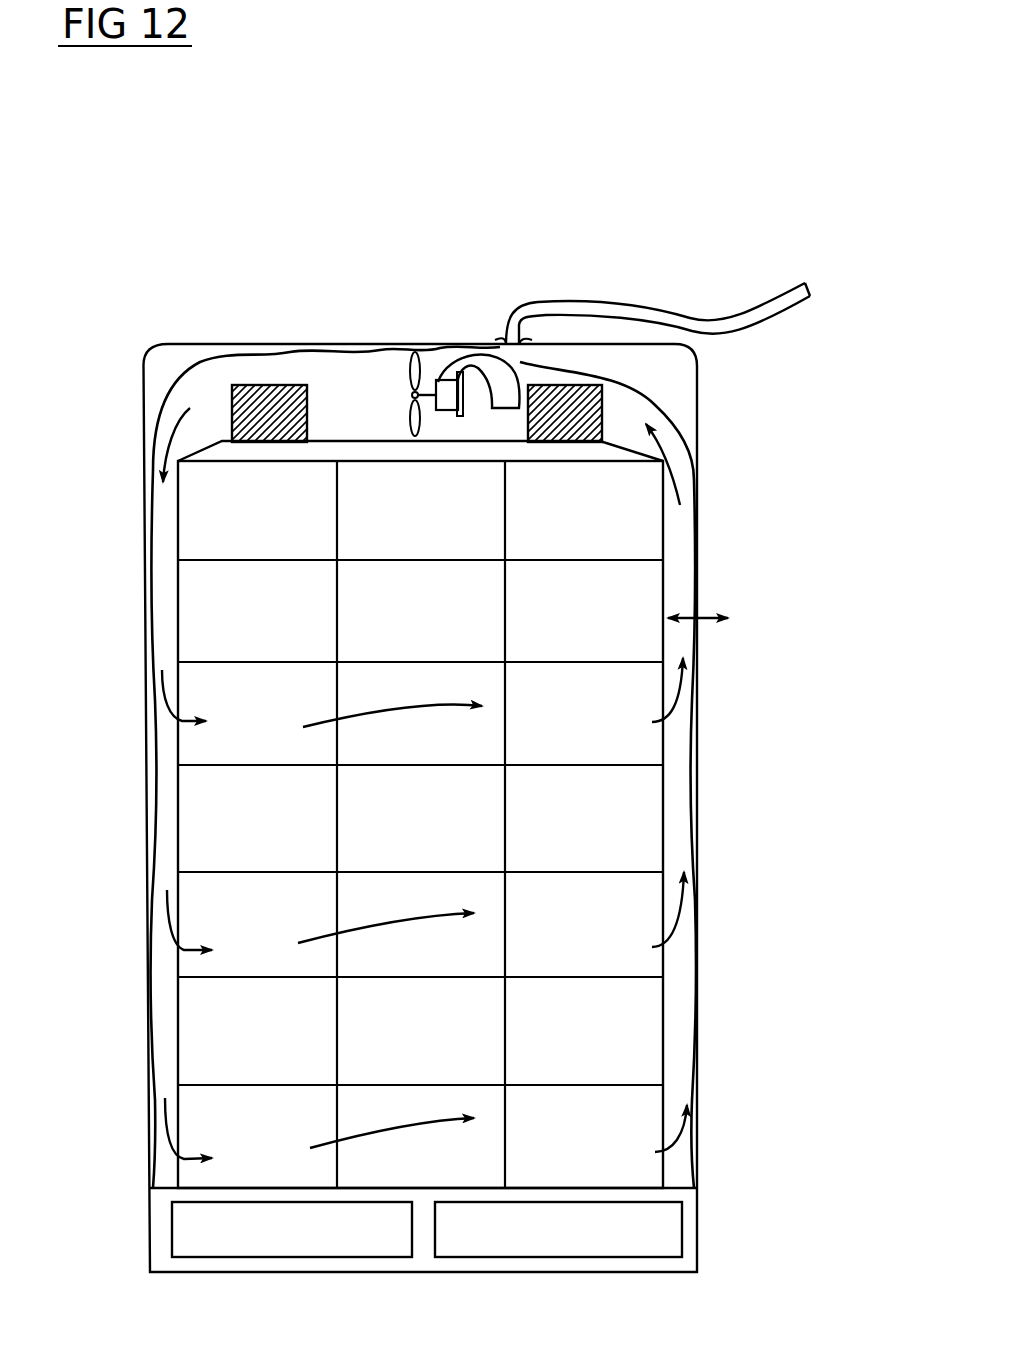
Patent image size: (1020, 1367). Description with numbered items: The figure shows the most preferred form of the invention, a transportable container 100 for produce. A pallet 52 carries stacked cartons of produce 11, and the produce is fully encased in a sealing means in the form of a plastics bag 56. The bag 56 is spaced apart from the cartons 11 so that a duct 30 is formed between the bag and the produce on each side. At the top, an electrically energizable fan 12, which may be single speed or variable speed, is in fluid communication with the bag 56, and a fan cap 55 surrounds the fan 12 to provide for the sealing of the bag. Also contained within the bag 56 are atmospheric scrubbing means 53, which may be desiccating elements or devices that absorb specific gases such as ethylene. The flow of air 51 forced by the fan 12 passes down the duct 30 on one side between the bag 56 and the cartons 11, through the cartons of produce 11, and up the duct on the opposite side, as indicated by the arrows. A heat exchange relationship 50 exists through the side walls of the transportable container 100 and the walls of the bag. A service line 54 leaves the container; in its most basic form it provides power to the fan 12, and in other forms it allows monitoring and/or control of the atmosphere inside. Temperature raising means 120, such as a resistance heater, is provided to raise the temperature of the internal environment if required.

The transportable container 100 is at (349, 278).
The atmospheric scrubbing means 53 is at (260, 390).
The fan 12 is at (425, 345).
The temperature raising means 120 is at (507, 413).
The service line 54 is at (725, 328).
The fan cap 55 is at (158, 412).
The plastics bag 56 is at (150, 633).
The heat exchange relationship 50 is at (727, 628).
The cartons of produce 11 is at (218, 843).
The flow of air 51 is at (690, 905).
The duct 30 is at (168, 1077).
The pallet 52 is at (698, 1208).